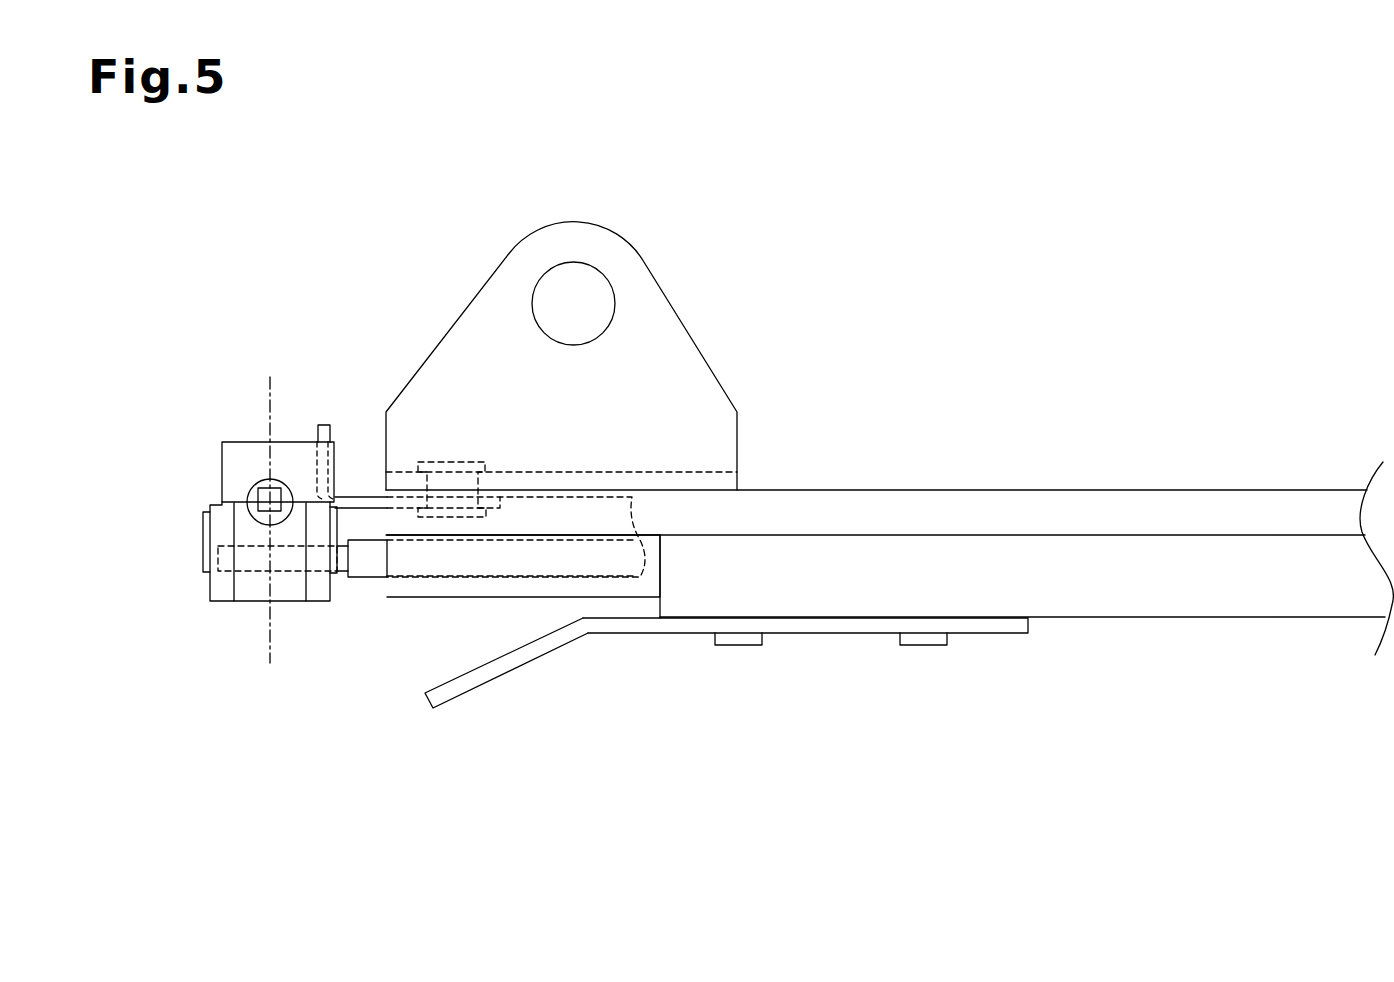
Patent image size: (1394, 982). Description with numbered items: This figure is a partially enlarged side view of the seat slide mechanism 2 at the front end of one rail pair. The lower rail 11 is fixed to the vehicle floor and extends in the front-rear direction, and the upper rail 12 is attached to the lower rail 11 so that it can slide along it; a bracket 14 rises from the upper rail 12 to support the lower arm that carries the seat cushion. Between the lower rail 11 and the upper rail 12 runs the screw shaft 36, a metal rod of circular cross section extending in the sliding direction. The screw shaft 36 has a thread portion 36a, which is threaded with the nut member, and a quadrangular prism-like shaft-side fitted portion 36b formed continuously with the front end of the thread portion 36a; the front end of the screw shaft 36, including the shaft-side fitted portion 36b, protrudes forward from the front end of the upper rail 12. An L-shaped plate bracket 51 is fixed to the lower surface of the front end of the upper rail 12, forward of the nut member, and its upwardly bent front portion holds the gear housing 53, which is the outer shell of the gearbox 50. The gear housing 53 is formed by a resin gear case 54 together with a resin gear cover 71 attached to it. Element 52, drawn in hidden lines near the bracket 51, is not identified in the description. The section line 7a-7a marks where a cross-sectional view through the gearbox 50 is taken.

The seat slide mechanism 2 is at (1154, 466).
The lower rail 11 is at (1110, 617).
The upper rail 12 is at (862, 490).
The front bracket 14 is at (698, 342).
The screw shaft 36 is at (372, 578).
The thread portion 36a is at (460, 577).
The shaft-side fitted portion 36b is at (254, 572).
The gearbox 50 is at (186, 619).
The bracket 51 is at (360, 495).
The fastening bolt 52 is at (458, 462).
The gear housing 53 is at (138, 485).
The gear case 54 is at (217, 528).
The gear cover 71 is at (232, 468).
The section line 7a- 7a is at (282, 397).